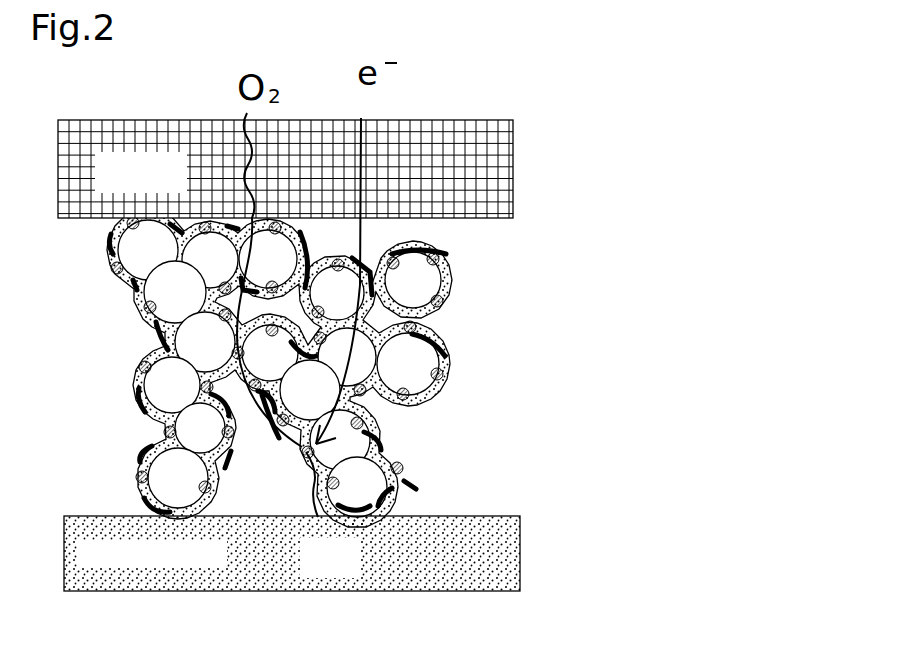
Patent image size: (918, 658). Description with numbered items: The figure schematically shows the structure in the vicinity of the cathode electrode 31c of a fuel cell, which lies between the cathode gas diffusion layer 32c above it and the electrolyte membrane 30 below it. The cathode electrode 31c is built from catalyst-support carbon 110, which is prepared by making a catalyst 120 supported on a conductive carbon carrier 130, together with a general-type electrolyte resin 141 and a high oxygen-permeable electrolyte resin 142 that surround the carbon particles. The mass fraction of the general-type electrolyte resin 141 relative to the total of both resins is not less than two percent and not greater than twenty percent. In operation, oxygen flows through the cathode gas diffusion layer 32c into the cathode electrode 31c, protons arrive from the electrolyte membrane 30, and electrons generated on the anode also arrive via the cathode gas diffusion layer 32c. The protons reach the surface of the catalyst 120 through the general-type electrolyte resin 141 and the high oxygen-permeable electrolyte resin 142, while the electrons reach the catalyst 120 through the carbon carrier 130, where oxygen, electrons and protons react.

The electrolyte membrane 30 is at (520, 522).
The cathode electrode 31c is at (411, 368).
The cathode gas diffusion layer 32c is at (513, 185).
The catalyst-support carbon 110 is at (356, 367).
The catalyst 120 is at (447, 377).
The carbon carrier 130 is at (418, 384).
The general-type electrolyte resin 141 is at (442, 335).
The high oxygen-permeable electrolyte resin 142 is at (445, 357).